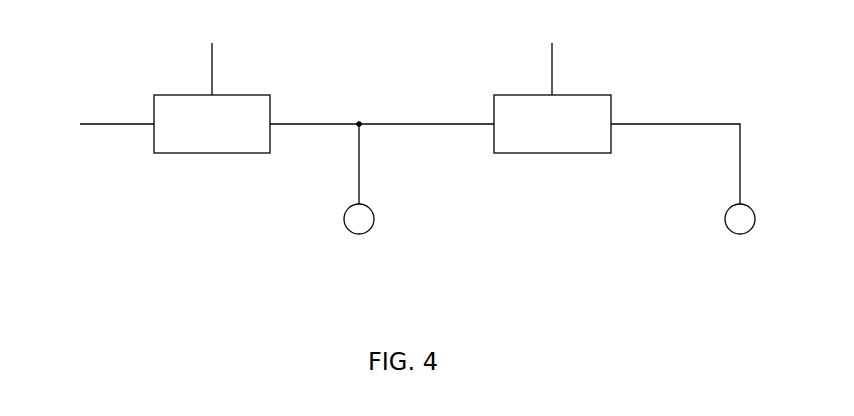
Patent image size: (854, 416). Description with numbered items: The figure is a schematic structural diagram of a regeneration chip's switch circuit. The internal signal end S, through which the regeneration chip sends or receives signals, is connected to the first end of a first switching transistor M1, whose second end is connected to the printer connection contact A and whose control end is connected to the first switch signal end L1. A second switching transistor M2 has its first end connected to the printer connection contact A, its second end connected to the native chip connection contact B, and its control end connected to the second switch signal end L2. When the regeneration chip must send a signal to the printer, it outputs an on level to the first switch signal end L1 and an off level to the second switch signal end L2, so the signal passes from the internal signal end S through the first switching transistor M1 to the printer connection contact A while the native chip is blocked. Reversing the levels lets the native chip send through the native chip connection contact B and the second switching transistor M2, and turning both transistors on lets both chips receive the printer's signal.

The internal signal end S is at (105, 124).
The first switching transistor M1 is at (212, 124).
The second switching transistor M2 is at (552, 124).
The first switch signal end L1 is at (193, 42).
The second switch signal end L2 is at (533, 42).
The printer connection contact A is at (359, 197).
The native chip connection contact B is at (683, 197).